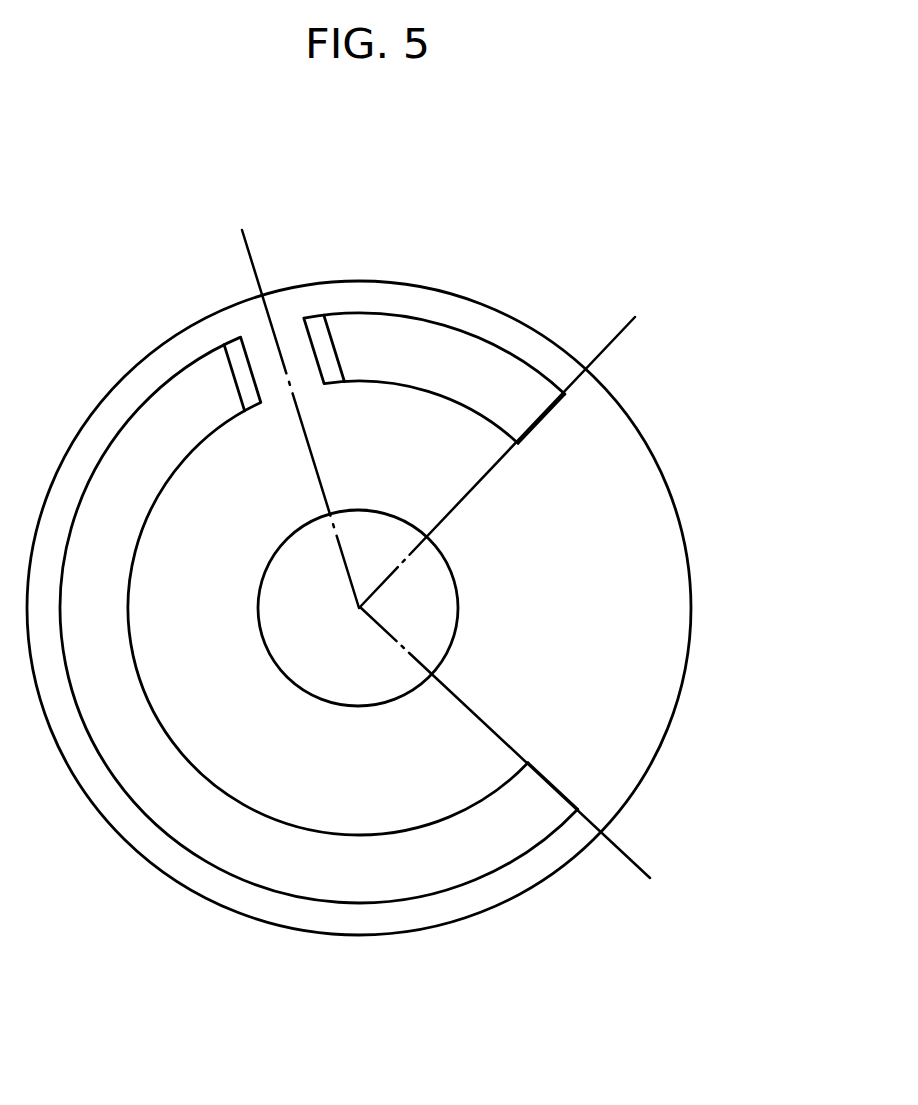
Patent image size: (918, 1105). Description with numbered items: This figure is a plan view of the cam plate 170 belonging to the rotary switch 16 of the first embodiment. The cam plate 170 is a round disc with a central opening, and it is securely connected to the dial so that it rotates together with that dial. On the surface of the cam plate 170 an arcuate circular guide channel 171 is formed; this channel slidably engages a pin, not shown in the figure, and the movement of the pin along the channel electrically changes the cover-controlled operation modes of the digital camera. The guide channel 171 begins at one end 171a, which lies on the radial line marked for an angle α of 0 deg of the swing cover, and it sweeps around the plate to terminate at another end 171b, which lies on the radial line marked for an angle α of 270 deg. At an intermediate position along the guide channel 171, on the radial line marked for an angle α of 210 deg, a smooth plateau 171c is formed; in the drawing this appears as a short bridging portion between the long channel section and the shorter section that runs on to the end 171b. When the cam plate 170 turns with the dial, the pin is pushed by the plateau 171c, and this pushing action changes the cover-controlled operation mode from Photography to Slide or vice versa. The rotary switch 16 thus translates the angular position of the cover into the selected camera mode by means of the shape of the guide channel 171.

The rotary switch 16 is at (567, 313).
The cam plate 170 is at (684, 537).
The guide channel 171 is at (463, 320).
The end 171a is at (553, 788).
The end 171b is at (543, 420).
The plateau 171c is at (300, 353).
The 210 degree angular position 210 is at (286, 400).
The 270 degree angular position 270 is at (536, 448).
The 0 degree angular position 0 is at (525, 756).